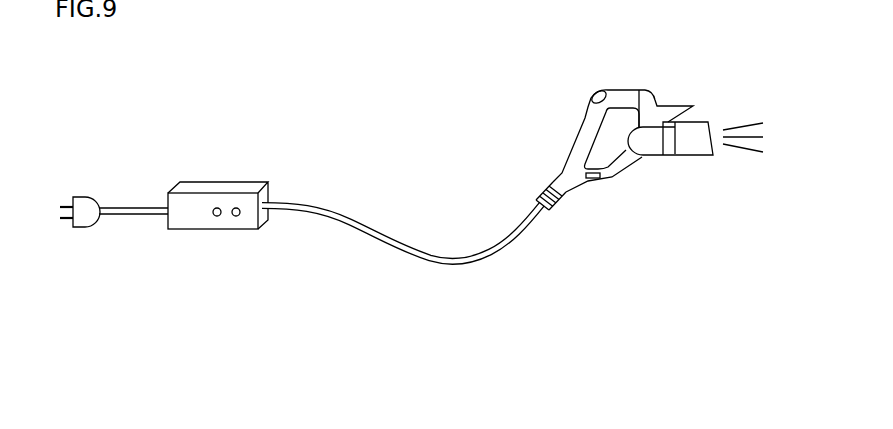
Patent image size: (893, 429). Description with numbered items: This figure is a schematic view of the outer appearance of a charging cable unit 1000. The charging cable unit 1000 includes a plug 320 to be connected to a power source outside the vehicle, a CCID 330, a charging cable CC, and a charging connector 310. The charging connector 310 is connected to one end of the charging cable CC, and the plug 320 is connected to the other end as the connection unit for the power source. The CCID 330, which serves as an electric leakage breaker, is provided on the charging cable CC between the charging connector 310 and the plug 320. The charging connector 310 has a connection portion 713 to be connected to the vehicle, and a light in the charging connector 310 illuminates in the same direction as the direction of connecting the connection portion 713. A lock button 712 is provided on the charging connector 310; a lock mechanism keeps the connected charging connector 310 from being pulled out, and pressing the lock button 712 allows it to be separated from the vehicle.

The charging cable unit 1000 is at (218, 57).
The plug 320 is at (84, 197).
The CCID 330 is at (212, 230).
The element CCID is at (218, 192).
The charging cable CC is at (410, 240).
The charging connector 310 is at (632, 90).
The lock button 712 is at (597, 92).
The connection portion 713 is at (716, 119).